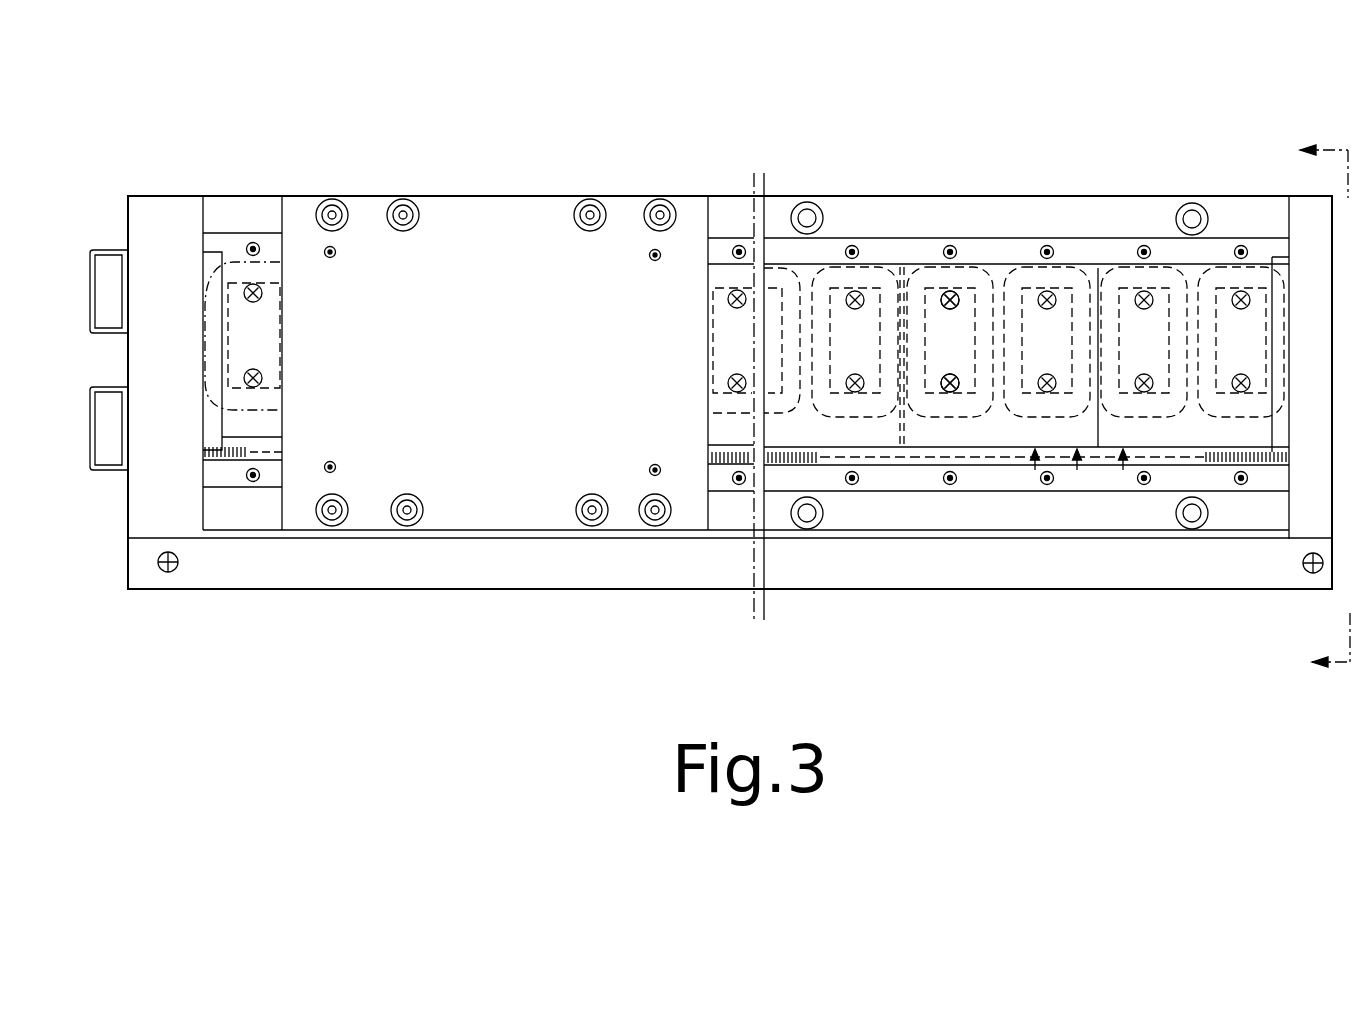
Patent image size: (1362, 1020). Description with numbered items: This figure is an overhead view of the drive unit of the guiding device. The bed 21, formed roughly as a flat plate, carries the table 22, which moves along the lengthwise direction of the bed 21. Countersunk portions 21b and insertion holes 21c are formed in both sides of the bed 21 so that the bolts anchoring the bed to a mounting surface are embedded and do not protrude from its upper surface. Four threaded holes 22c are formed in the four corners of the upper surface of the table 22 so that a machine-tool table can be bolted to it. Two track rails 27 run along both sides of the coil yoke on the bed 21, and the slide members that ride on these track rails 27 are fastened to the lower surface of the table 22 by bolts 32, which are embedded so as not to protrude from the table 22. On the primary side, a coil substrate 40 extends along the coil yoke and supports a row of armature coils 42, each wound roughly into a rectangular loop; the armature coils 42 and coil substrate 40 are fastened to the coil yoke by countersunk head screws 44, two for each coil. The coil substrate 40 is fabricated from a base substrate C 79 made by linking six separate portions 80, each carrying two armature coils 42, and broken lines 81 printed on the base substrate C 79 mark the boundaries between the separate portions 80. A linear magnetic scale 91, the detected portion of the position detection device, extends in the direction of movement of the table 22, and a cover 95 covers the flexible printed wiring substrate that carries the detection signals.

The bed 21 is at (225, 515).
The countersunk portions 21b is at (798, 204).
The insertion holes 21c is at (807, 202).
The table 22 is at (502, 212).
The threaded holes 22c is at (336, 248).
The track rails 27 is at (880, 245).
The bolts 32 is at (332, 199).
The coil substrate 40 is at (1077, 470).
The armature coils 42 is at (237, 268).
The countersunk head screws 44 is at (262, 293).
The base substrate C 79 is at (1035, 470).
The separate portions 80 is at (1176, 430).
The broken lines 81 is at (902, 420).
The linear magnetic scale 91 is at (980, 460).
The cover 95 is at (502, 570).